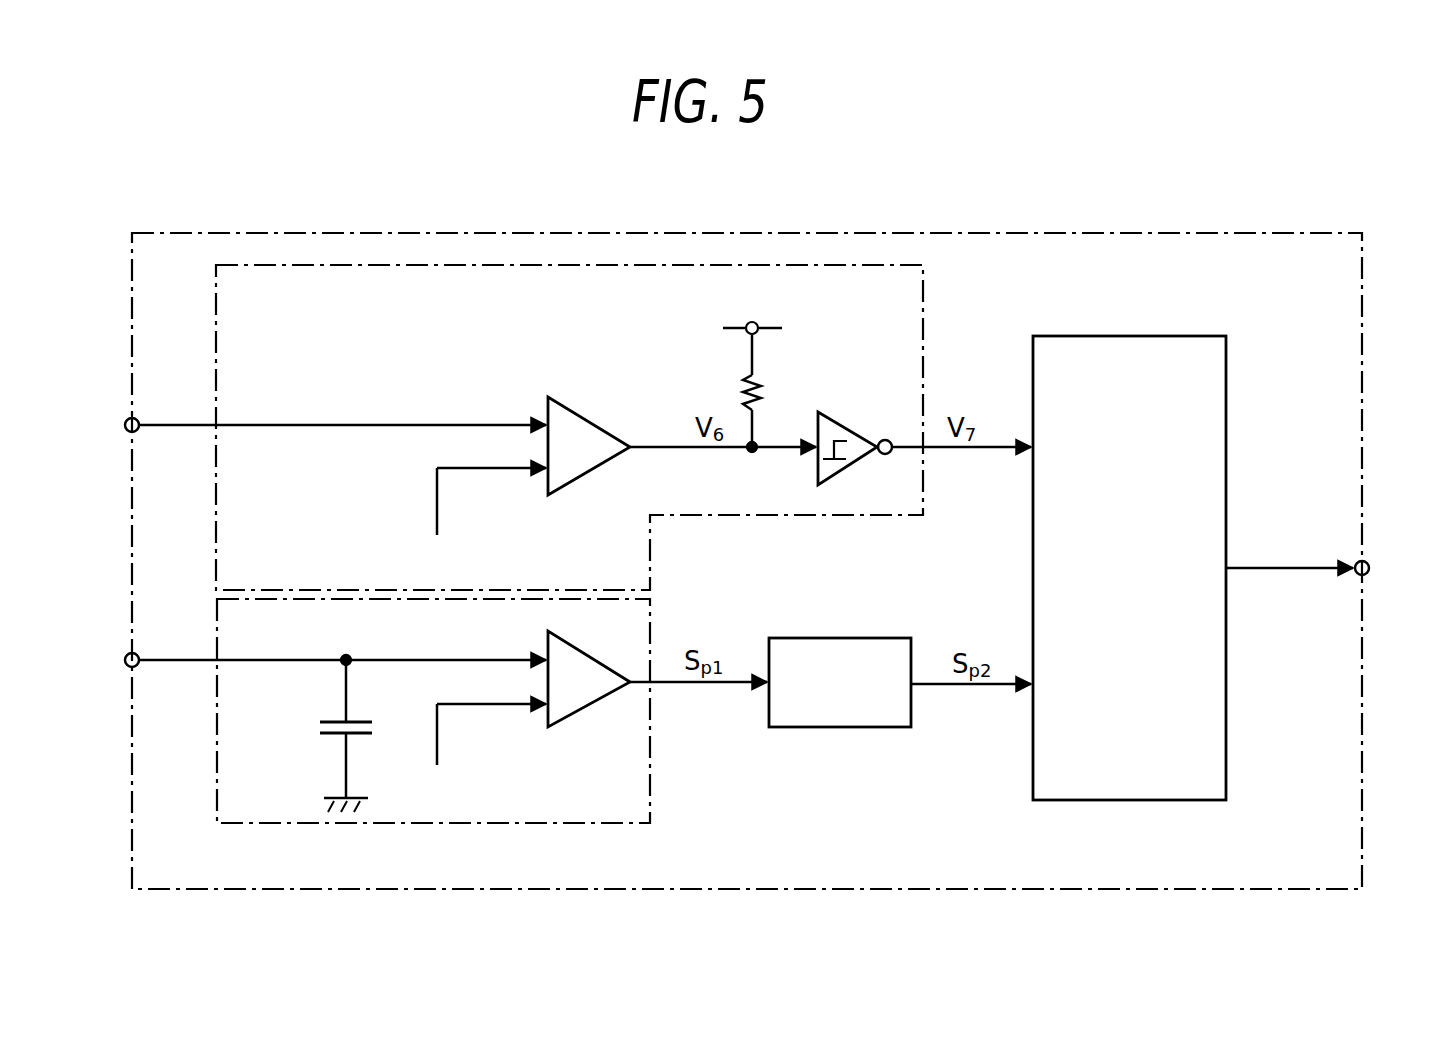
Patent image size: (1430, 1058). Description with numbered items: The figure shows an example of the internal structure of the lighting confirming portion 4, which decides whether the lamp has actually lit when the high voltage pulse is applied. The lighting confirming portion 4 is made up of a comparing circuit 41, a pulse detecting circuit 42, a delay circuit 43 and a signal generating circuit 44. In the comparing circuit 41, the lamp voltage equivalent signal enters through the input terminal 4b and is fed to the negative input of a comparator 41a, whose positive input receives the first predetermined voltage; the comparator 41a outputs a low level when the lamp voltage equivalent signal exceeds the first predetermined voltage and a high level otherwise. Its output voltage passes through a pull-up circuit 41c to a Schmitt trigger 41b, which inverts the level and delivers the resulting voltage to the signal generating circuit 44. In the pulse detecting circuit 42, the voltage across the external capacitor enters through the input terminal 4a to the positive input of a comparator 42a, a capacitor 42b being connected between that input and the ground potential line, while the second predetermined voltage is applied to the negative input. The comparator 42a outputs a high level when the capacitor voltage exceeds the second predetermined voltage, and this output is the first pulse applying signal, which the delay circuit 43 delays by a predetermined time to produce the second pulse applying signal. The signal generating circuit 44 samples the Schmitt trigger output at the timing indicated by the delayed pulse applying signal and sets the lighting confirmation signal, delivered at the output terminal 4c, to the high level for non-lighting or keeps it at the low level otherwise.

The lighting confirming portion 4 is at (1168, 234).
The input terminal 4a is at (129, 653).
The input terminal 4b is at (129, 419).
The output terminal 4c is at (1366, 562).
The comparing circuit 41 is at (383, 266).
The comparator 41a is at (568, 405).
The Schmitt trigger 41b is at (855, 434).
The pull-up circuit 41c is at (773, 373).
The pulse detecting circuit 42 is at (652, 765).
The comparator 42a is at (593, 710).
The capacitor 42b is at (356, 722).
The delay circuit 43 is at (848, 638).
The signal generating circuit 44 is at (1122, 336).